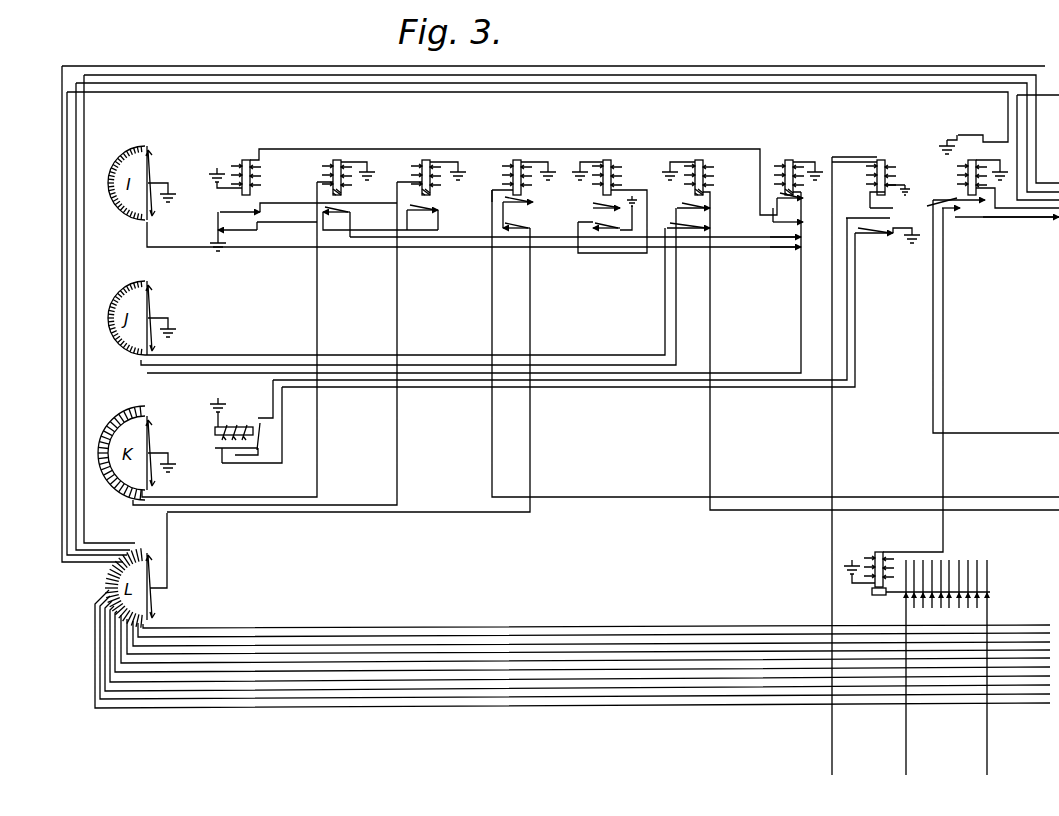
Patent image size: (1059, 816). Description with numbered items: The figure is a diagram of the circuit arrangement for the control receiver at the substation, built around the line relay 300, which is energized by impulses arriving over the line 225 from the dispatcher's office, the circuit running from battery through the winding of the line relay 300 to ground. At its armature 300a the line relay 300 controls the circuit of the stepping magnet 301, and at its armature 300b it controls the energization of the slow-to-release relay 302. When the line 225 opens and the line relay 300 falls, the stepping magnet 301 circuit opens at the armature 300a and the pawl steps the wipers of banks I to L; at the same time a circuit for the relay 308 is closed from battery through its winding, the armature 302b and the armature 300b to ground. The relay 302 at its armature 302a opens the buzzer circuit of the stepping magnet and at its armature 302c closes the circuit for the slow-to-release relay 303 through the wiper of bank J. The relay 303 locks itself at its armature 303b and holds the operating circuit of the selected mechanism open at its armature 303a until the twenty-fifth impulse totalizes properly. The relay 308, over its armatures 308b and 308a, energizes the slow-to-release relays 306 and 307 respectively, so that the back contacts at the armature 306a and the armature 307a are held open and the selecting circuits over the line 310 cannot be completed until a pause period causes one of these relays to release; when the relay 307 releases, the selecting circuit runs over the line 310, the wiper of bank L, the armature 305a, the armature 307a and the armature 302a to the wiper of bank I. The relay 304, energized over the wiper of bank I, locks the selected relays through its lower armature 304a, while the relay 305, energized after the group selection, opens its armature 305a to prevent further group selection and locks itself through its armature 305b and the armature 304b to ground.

The line 310 is at (969, 64).
The relay 308 is at (255, 158).
The relay 307 is at (341, 158).
The relay 306 is at (430, 158).
The relay 305 is at (521, 158).
The relay 304 is at (611, 158).
The slow-to-release relay 303 is at (703, 158).
The slow-to-release relay 302 is at (793, 158).
The line relay 300 is at (885, 158).
The stepping magnet 301 is at (234, 425).
The line 225 is at (835, 574).
The armature of relay 307 307a is at (337, 212).
The armature of relay 308 308b is at (234, 212).
The armature of relay 308 308a is at (254, 230).
The armature of relay 306 306a is at (431, 210).
The armature of relay 305 305b is at (507, 203).
The armature of relay 305 305a is at (523, 228).
The armature of relay 304 304b is at (598, 206).
The lower armature of relay 304 304a is at (610, 236).
The armature of relay 303 303b is at (700, 207).
The armature of relay 302 302c is at (775, 204).
The armature of relay 302 302b is at (772, 223).
The armature of relay 303 303a is at (705, 234).
The armature of relay 302 302a is at (788, 248).
The armature of relay 300 300b is at (867, 207).
The armature of relay 300 300a is at (882, 237).